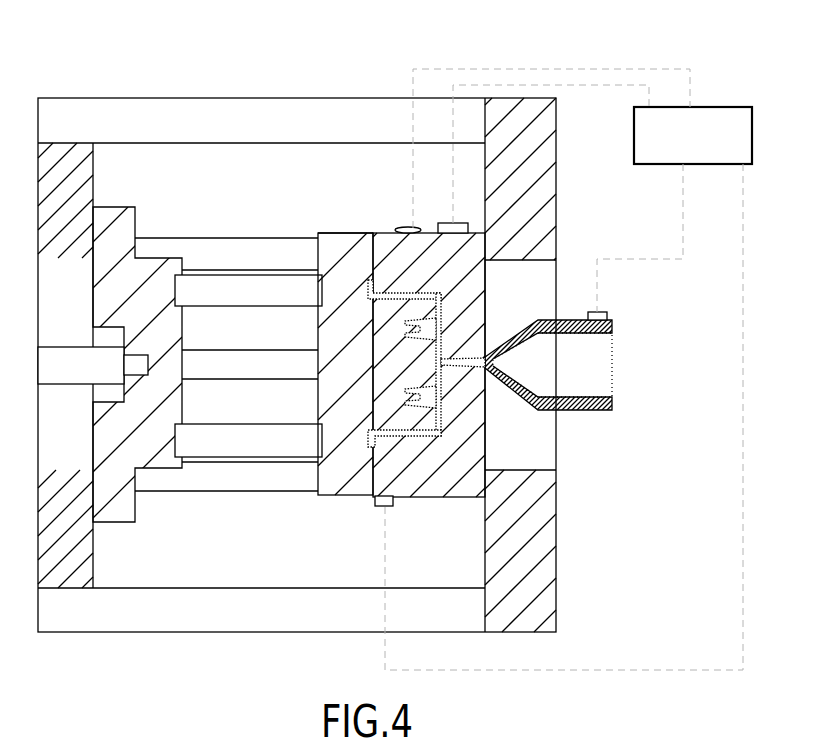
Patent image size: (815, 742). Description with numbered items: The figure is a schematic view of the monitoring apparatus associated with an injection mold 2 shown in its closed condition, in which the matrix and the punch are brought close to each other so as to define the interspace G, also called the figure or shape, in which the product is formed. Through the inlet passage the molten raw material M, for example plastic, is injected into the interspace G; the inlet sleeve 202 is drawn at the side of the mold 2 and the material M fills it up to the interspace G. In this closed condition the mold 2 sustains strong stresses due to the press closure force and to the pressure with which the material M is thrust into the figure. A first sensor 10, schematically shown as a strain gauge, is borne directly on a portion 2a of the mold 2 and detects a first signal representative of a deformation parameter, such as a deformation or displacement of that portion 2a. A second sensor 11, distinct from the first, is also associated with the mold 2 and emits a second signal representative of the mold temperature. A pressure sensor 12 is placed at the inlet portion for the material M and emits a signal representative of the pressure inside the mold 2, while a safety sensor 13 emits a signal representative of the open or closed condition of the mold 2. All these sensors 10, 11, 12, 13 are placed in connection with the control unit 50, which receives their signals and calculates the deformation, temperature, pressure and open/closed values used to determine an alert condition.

The mold 2 is at (455, 512).
The portion of the mold 2a is at (382, 230).
The interspace G is at (440, 433).
The injection sleeve / nozzle 202 is at (610, 410).
The raw material M is at (566, 376).
The second sensor 11 is at (396, 231).
The first sensor 10 is at (456, 223).
The pressure sensor 12 is at (603, 312).
The safety sensor 13 is at (373, 502).
The control unit 50 is at (680, 149).